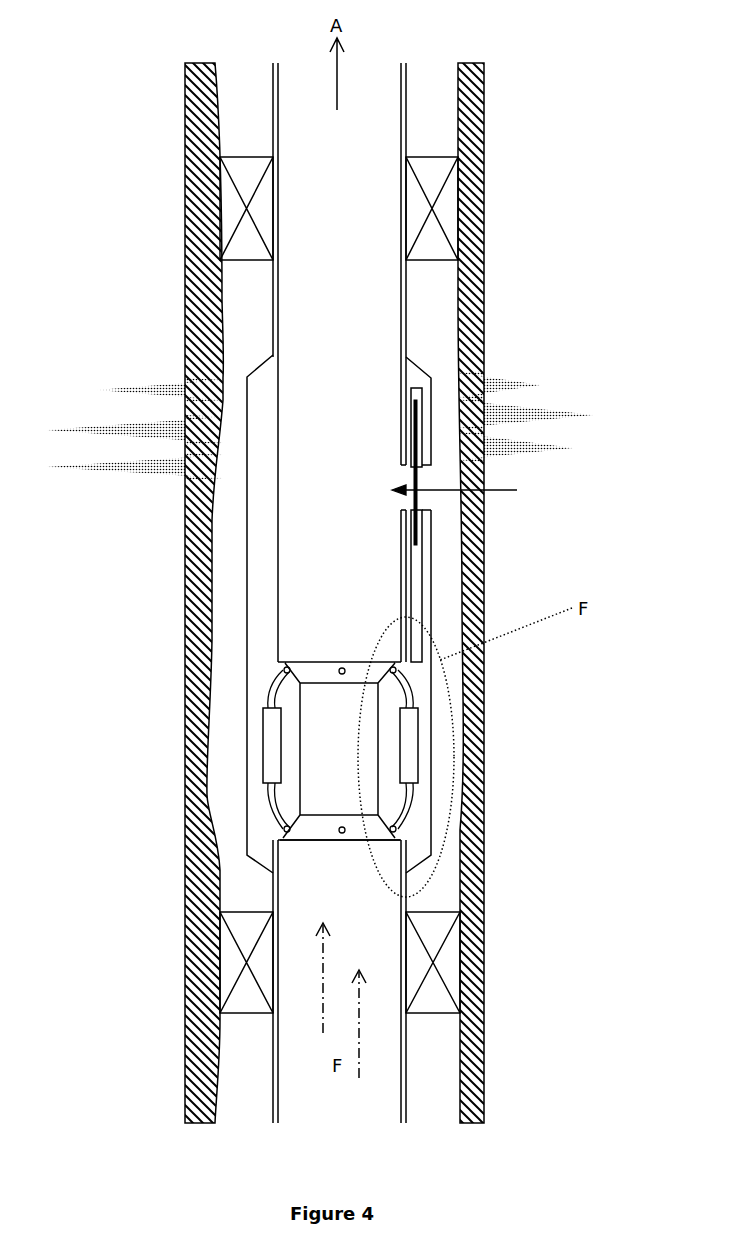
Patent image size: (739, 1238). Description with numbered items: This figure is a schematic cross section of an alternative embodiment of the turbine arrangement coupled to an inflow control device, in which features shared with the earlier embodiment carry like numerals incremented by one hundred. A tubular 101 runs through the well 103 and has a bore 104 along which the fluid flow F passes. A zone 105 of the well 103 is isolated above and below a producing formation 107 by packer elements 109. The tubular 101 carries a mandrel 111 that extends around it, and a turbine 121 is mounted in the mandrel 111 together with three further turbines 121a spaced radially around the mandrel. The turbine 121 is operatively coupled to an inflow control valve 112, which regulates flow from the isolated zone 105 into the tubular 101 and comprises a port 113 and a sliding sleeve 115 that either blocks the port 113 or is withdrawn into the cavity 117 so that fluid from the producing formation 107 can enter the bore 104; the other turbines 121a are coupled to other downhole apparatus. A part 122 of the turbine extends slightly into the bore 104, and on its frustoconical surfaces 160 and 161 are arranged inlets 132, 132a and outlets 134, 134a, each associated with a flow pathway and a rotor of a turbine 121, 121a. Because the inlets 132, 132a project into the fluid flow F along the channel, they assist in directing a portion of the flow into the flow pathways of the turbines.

The tubular 101 is at (273, 112).
The well 103 is at (432, 77).
The bore 104 is at (353, 218).
The isolated zone 105 is at (230, 635).
The producing formation 107 is at (117, 395).
The packer elements 109 is at (232, 963).
The mandrel 111 is at (420, 362).
The inflow control valve 112 is at (431, 503).
The port 113 is at (474, 495).
The sliding sleeve 115 is at (411, 418).
The cavity 117 is at (422, 567).
The turbine 121 is at (339, 733).
The further turbines 121a is at (256, 757).
The inwardly extending part 122 is at (288, 690).
The inlet 132 is at (392, 827).
The inlet 132a is at (340, 834).
The outlet 134 is at (395, 670).
The outlet 134a is at (283, 665).
The frustoconical surface 160 is at (361, 836).
The frustoconical surface 161 is at (354, 665).